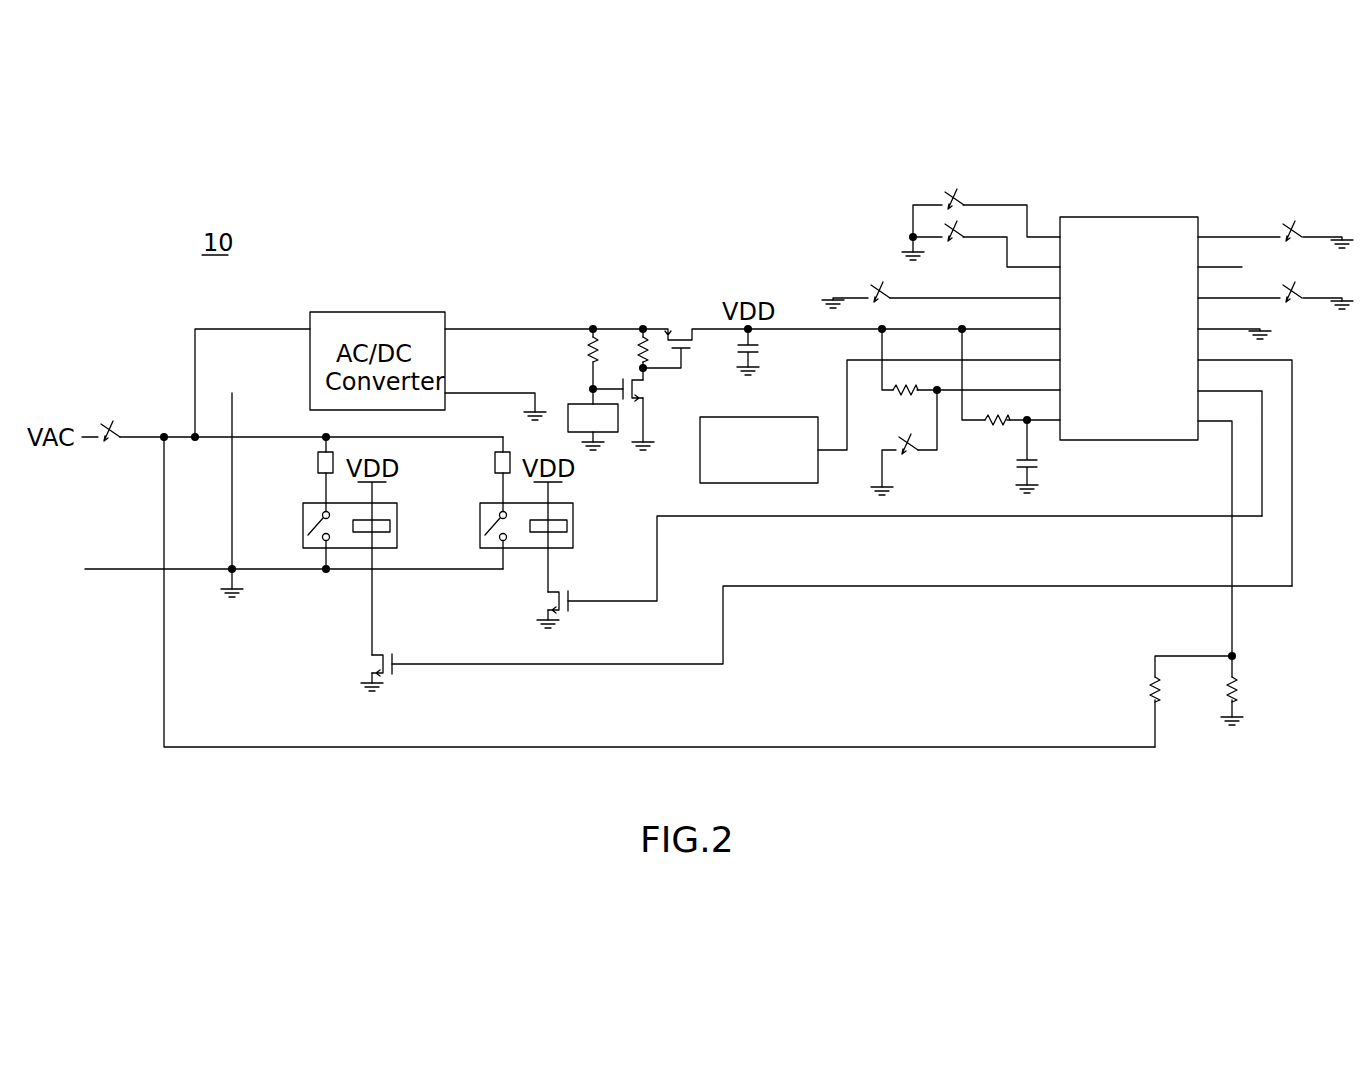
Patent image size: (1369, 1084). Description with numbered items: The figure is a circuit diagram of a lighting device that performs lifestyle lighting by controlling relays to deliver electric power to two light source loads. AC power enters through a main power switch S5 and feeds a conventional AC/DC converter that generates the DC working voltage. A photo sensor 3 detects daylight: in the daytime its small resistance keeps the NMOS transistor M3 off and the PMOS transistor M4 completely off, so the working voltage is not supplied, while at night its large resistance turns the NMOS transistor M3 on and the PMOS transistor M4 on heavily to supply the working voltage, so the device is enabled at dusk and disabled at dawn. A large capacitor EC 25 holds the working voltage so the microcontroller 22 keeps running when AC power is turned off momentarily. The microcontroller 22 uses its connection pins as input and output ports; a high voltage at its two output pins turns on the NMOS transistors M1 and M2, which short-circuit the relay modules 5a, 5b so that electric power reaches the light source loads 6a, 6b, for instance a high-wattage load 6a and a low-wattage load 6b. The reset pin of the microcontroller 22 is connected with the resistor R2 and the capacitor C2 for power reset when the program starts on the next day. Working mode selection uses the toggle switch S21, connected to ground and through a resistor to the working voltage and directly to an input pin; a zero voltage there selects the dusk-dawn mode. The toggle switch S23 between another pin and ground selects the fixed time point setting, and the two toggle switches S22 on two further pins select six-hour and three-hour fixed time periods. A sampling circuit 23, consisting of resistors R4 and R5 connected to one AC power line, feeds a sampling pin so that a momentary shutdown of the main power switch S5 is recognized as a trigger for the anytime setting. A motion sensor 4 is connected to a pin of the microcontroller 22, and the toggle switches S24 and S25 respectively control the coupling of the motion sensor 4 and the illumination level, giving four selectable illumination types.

The photo sensor CDS 3 is at (612, 432).
The motion sensor 4 is at (795, 417).
The capacitor EC 25 is at (717, 382).
The microcontroller 22 is at (1185, 215).
The sampling circuit 23 is at (1220, 696).
The relay module 5a is at (303, 524).
The relay module 5b is at (480, 524).
The light source load 6a is at (318, 461).
The light source load 6b is at (495, 461).
The main power switch S5 is at (108, 412).
The toggle switch S21 is at (915, 457).
The toggle switches S22 is at (950, 185).
The toggle switch S23 is at (880, 280).
The toggle switch S24 is at (1300, 312).
The toggle switch S25 is at (1292, 225).
The NMOS transistor M1 is at (810, 638).
The NMOS transistor M2 is at (883, 572).
The NMOS transistor M3 is at (639, 389).
The PMOS transistor M4 is at (851, 334).
The resistor R2 is at (1011, 392).
The resistor R4 is at (1173, 701).
The resistor R5 is at (1217, 690).
The capacitor C2 is at (1044, 456).